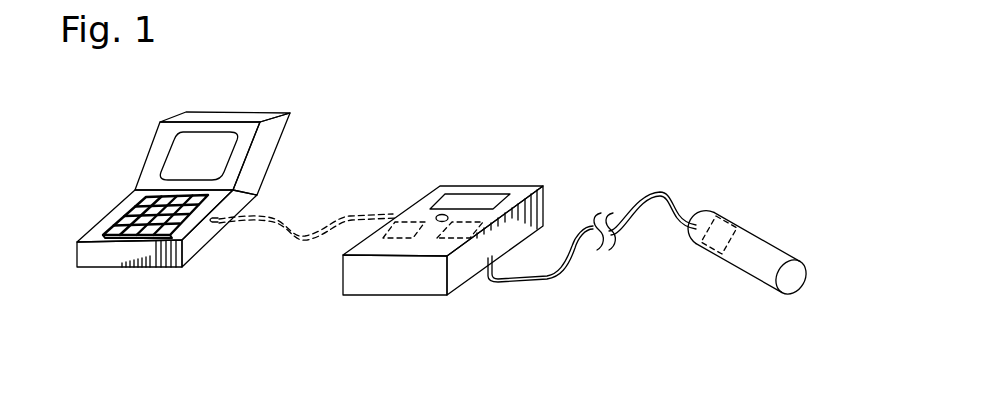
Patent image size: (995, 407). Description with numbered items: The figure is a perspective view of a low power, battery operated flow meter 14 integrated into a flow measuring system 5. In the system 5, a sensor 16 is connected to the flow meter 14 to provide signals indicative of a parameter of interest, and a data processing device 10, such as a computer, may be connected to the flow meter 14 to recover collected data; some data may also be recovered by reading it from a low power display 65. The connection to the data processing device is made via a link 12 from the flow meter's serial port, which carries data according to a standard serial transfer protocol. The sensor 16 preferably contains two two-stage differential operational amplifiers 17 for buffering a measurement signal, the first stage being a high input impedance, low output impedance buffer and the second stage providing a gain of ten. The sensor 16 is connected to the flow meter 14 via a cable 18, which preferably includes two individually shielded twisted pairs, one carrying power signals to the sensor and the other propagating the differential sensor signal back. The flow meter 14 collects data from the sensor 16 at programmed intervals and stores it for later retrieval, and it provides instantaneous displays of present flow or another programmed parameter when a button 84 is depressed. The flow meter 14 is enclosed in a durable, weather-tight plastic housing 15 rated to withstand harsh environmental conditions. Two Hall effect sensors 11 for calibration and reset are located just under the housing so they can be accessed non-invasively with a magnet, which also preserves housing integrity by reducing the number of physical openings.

The flow measuring system 5 is at (619, 100).
The data processing device 10 is at (277, 76).
The Hall effect sensors 11 is at (462, 221).
The link 12 is at (308, 204).
The flow meter 14 is at (503, 154).
The plastic housing 15 is at (342, 281).
The sensor 16 is at (778, 201).
The two-stage differential operational amplifiers 17 is at (718, 255).
The cable 18 is at (673, 148).
The low power display 65 is at (443, 195).
The button 84 is at (449, 216).